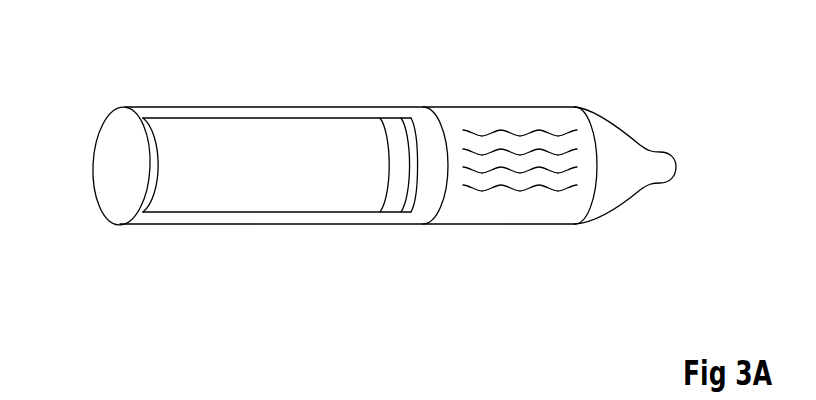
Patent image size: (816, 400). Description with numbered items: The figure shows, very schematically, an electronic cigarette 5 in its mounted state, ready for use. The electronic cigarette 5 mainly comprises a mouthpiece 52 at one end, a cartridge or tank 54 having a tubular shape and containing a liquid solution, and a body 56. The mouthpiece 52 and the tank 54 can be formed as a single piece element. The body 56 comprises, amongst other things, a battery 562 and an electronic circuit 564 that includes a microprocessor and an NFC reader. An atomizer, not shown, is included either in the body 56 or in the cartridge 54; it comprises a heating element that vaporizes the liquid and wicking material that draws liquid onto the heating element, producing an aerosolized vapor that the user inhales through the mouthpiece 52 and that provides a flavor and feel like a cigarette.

The electronic cigarette 5 is at (88, 303).
The mouthpiece 52 is at (622, 212).
The cartridge or tank 54 is at (490, 225).
The body 56 is at (262, 225).
The battery 562 is at (268, 143).
The electronic circuit 564 is at (415, 128).